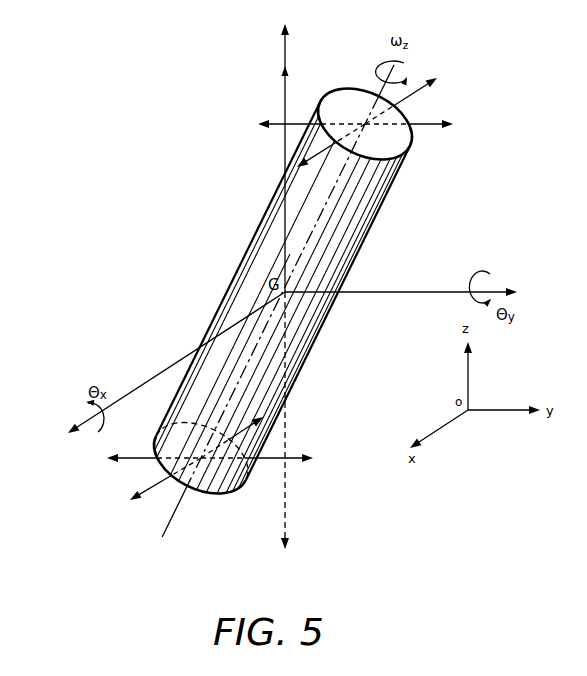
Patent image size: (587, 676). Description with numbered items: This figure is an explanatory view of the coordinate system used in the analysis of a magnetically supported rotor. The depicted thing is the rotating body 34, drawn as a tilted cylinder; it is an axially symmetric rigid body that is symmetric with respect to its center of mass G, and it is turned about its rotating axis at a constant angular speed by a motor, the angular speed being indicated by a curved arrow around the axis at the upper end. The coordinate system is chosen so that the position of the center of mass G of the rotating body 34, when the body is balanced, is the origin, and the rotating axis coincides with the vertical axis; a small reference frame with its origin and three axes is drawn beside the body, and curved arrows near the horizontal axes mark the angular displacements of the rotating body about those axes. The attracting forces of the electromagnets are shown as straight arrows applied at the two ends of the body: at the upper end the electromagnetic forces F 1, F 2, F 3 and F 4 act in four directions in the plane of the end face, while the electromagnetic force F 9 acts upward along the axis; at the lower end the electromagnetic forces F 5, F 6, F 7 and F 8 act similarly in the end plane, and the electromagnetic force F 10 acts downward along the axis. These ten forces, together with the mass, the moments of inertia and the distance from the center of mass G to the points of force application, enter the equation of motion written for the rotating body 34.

The rotating body 34 is at (377, 197).
The electromagnetic force F1 1 is at (327, 160).
The electromagnetic force F2 2 is at (419, 127).
The electromagnetic force F3 3 is at (410, 97).
The electromagnetic force F4 4 is at (298, 126).
The electromagnetic force F5 5 is at (159, 493).
The electromagnetic force F6 6 is at (267, 461).
The electromagnetic force F7 7 is at (235, 425).
The electromagnetic force F8 8 is at (142, 462).
The electromagnetic force F9 9 is at (296, 76).
The electromagnetic force F10 10 is at (289, 557).